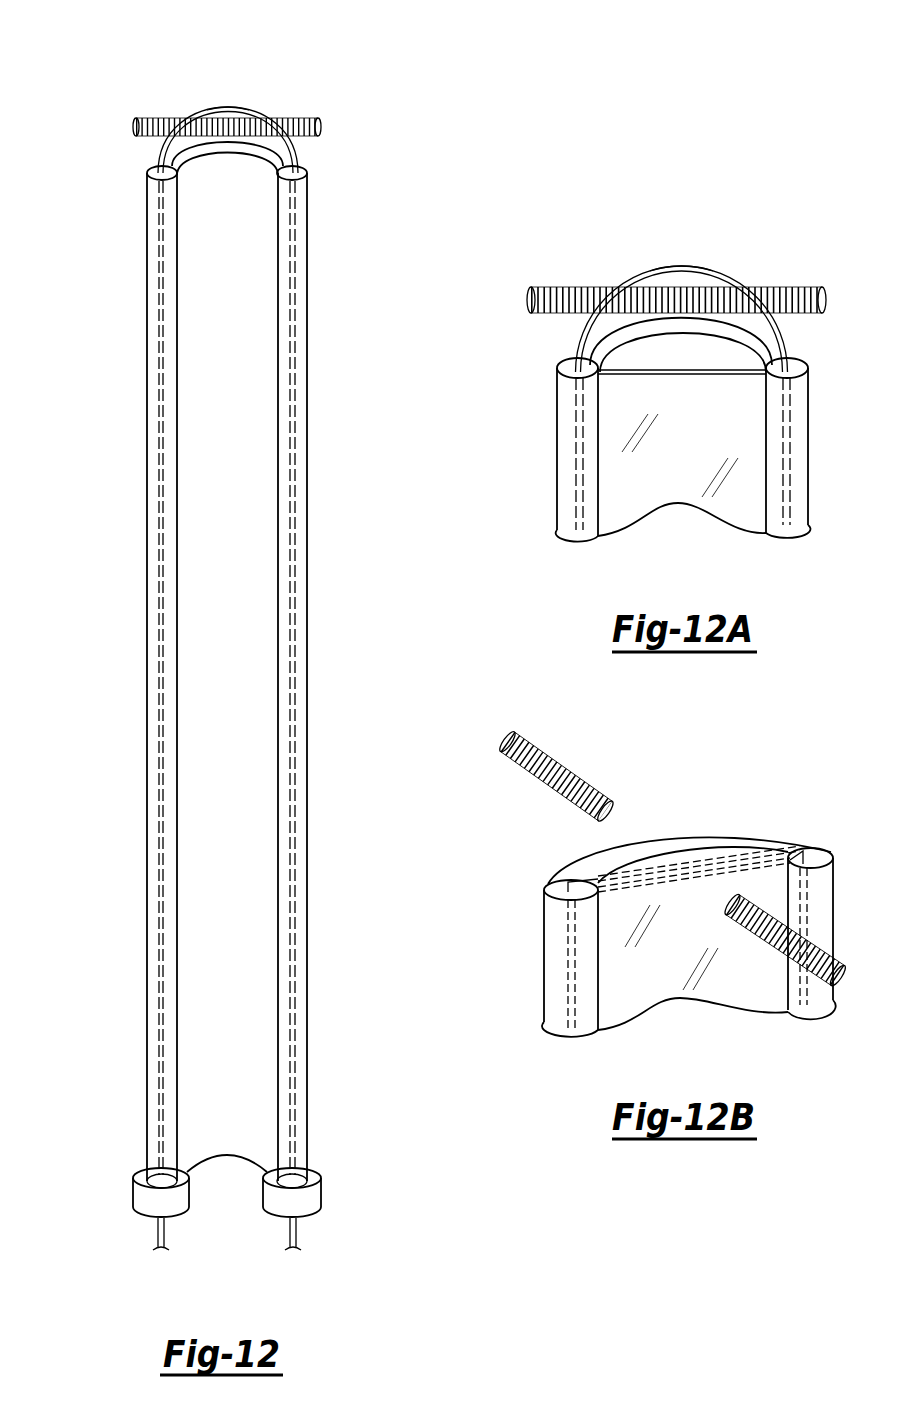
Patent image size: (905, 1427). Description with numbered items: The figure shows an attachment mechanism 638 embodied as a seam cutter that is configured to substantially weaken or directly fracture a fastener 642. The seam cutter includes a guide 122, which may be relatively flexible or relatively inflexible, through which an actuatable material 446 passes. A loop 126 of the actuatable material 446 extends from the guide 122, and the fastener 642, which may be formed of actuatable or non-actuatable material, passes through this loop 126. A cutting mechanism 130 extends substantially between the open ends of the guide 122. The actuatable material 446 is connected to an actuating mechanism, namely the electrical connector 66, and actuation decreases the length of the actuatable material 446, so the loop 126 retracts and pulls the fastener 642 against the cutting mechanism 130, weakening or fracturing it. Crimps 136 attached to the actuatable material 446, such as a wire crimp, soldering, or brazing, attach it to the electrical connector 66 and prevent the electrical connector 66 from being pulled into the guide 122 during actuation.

In FIG. 12, the attachment mechanism 638 is at (297, 94).
In FIG. 12, the guide 122 is at (147, 258).
In FIG. 12A, the guide 122 is at (557, 466).
In FIG. 12B, the guide 122 is at (544, 952).
In FIG. 12, the loop 126 is at (227, 107).
In FIG. 12A, the loop 126 is at (681, 265).
In FIG. 12, the actuatable material 446 is at (165, 152).
In FIG. 12A, the actuatable material 446 is at (578, 333).
In FIG. 12B, the actuatable material 446 is at (683, 858).
In FIG. 12, the fastener 642 is at (163, 118).
In FIG. 12A, the fastener 642 is at (586, 287).
In FIG. 12B, the fastener 642 is at (538, 742).
In FIG. 12, the crimps 136 is at (133, 1188).
In FIG. 12, the electrical connector 66 is at (292, 1233).
In FIG. 12A, the cutting mechanism 130 is at (683, 374).